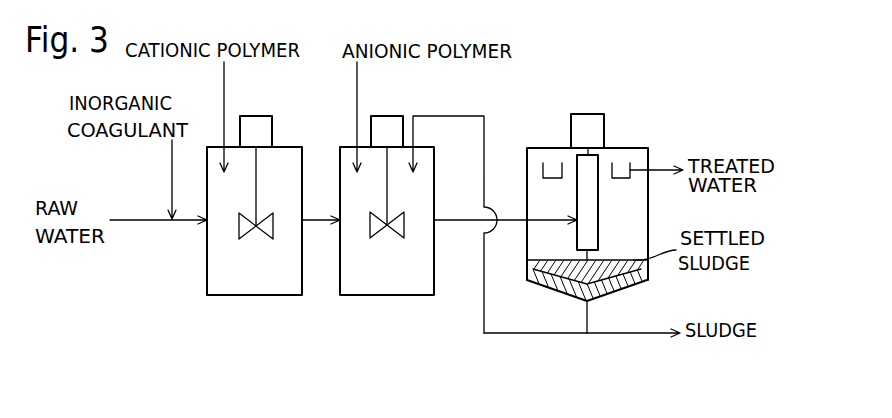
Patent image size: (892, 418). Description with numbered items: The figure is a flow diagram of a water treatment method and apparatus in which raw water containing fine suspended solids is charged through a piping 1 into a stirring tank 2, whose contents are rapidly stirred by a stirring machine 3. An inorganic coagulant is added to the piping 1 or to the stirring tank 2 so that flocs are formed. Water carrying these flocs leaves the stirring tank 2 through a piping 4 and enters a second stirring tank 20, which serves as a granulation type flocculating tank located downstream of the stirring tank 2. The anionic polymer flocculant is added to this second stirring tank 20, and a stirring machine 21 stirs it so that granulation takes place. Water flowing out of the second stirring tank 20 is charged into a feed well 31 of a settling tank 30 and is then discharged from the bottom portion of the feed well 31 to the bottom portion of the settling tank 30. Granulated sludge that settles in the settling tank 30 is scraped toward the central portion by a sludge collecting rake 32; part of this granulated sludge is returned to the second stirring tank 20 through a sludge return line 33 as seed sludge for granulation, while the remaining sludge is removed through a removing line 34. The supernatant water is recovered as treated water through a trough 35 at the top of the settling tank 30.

The piping 1 is at (128, 222).
The stirring tank 2 is at (218, 296).
The stirring machine 3 is at (258, 241).
The piping 4 is at (453, 219).
The second stirring tank 20 is at (356, 296).
The stirring machine 21 is at (389, 239).
The settling tank 30 is at (547, 147).
The feed well 31 is at (599, 231).
The sludge collecting rake 32 is at (611, 279).
The sludge return line 33 is at (510, 334).
The removing line 34 is at (651, 334).
The trough 35 is at (620, 179).